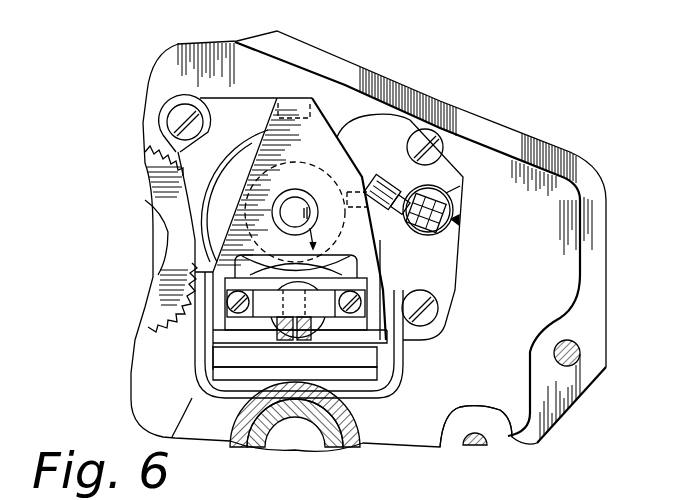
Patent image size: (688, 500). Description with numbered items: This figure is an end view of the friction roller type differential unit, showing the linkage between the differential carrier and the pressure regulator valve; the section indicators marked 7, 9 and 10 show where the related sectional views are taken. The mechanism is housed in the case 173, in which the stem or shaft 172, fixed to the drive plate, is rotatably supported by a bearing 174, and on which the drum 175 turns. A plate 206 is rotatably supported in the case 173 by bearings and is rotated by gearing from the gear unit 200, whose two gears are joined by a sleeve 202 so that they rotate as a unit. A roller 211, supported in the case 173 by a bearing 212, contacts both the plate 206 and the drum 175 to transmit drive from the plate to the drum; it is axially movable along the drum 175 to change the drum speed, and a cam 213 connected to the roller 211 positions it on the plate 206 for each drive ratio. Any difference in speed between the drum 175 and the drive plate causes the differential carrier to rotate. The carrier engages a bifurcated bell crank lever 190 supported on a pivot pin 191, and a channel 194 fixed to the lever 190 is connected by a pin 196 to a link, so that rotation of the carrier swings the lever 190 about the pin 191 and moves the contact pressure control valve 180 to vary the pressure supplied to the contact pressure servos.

The case 173 is at (300, 102).
The drum 175 is at (237, 185).
The stem or shaft 172 is at (297, 200).
The bearing 174 is at (296, 202).
The roller 211 is at (318, 226).
The bell crank lever 190 is at (401, 173).
The pivot pin 191 is at (473, 179).
The contact pressure control valve 180 is at (457, 220).
The channel 194 is at (447, 235).
The pin 196 is at (405, 238).
The bearing 212 is at (297, 284).
The cam 213 is at (297, 337).
The plate 206 is at (196, 366).
The gear unit 200 is at (366, 420).
The sleeve 202 is at (231, 440).
The section line 10 is at (293, 10).
The section line 9 is at (395, 62).
The section line 7 is at (490, 200).